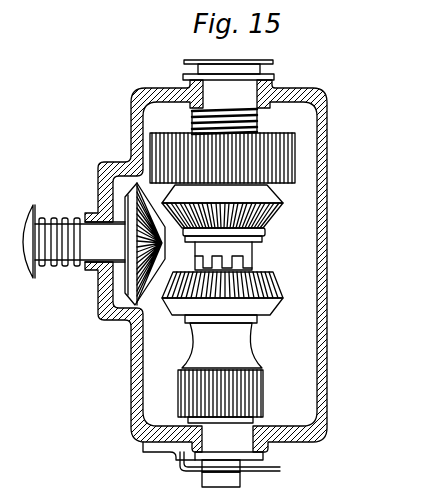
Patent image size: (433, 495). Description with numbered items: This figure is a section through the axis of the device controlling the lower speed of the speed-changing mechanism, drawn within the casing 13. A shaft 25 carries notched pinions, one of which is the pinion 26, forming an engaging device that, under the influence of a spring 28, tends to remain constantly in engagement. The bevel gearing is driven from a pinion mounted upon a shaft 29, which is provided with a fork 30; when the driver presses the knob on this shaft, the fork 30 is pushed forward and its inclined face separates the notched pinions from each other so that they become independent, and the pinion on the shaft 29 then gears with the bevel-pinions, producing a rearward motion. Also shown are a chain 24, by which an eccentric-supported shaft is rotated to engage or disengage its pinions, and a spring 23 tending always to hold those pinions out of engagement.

The casing 13 is at (206, 266).
The spring 28 is at (262, 132).
The chain 24 is at (222, 187).
The fork 30 is at (250, 262).
The shaft 29 is at (74, 241).
The pinion 26 is at (222, 347).
The shaft 25 is at (221, 481).
The spring 23 is at (230, 472).